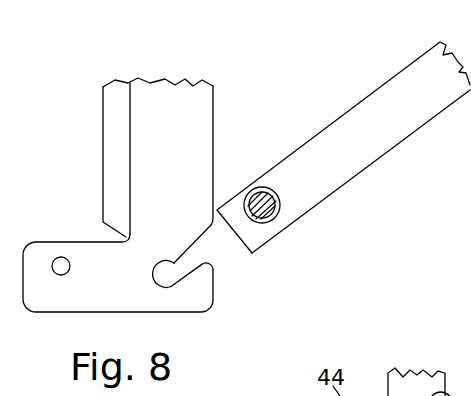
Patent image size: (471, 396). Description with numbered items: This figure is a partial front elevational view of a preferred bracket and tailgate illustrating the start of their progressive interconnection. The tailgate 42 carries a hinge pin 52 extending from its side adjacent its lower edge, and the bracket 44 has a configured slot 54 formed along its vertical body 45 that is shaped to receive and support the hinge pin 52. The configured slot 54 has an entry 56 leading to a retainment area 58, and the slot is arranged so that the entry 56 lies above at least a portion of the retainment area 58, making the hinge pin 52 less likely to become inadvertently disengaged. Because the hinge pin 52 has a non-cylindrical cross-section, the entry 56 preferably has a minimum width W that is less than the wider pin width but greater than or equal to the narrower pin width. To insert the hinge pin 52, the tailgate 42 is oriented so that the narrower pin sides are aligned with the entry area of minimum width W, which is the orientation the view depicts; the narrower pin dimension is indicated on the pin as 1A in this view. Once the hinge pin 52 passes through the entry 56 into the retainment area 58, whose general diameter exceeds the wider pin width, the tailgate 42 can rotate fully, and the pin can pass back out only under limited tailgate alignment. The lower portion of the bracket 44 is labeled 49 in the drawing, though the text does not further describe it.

The tailgate 42 is at (345, 165).
The bracket 44 is at (107, 76).
The vertical body 45 is at (214, 135).
The base plate 49 is at (62, 302).
The hinge pin 52 is at (276, 219).
The configured slot 54 is at (190, 281).
The entry 56 is at (219, 252).
The retainment area 58 is at (176, 297).
The minimum width of the entry W is at (192, 264).
The section designation 1A is at (286, 182).